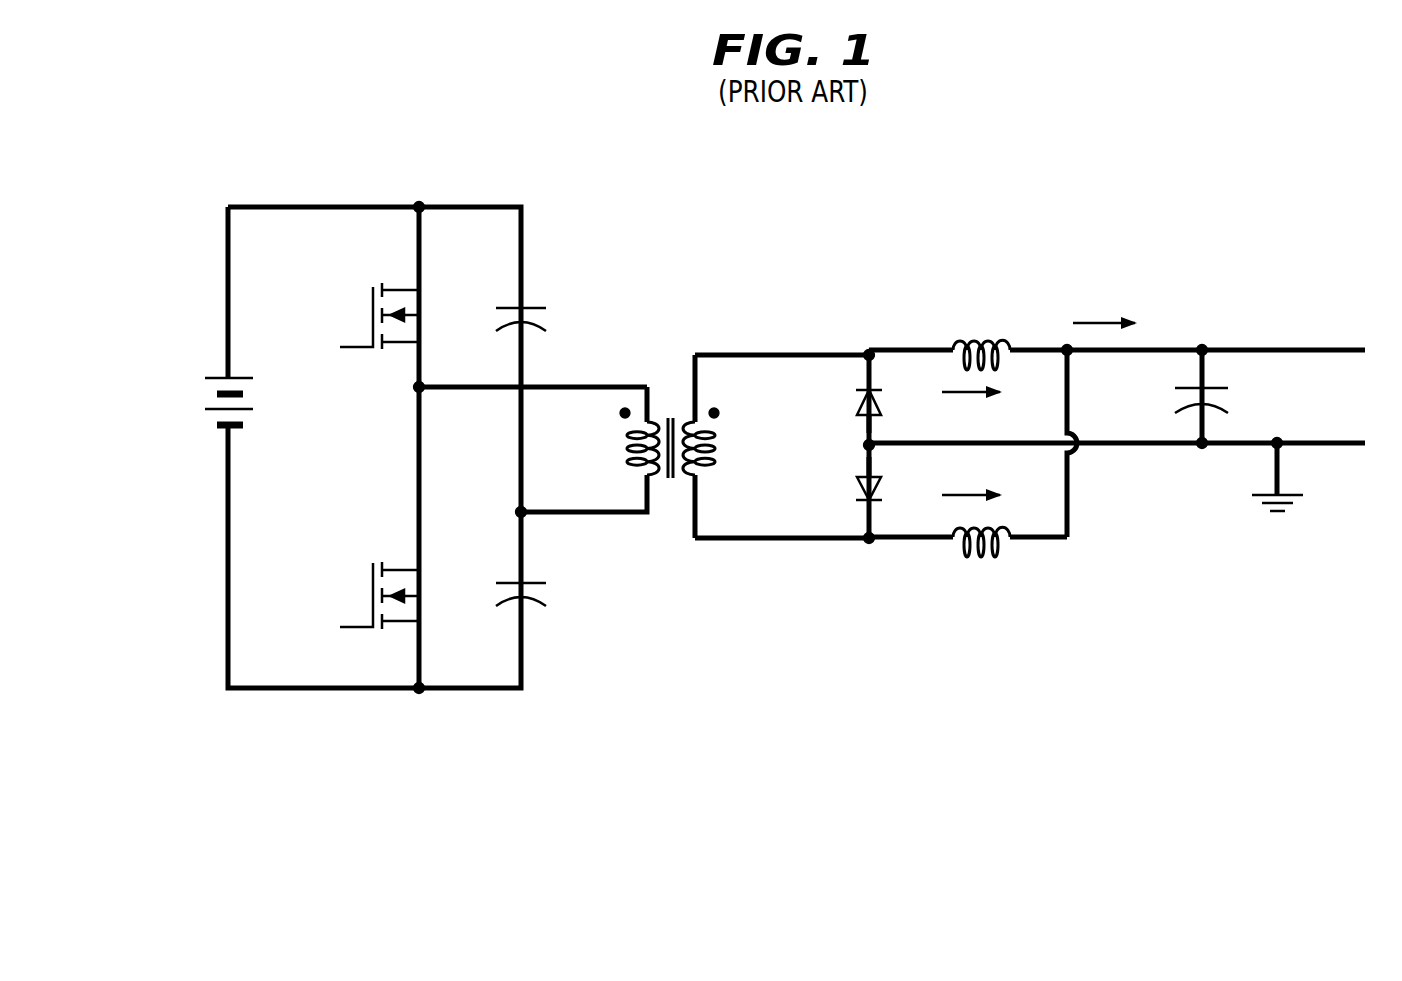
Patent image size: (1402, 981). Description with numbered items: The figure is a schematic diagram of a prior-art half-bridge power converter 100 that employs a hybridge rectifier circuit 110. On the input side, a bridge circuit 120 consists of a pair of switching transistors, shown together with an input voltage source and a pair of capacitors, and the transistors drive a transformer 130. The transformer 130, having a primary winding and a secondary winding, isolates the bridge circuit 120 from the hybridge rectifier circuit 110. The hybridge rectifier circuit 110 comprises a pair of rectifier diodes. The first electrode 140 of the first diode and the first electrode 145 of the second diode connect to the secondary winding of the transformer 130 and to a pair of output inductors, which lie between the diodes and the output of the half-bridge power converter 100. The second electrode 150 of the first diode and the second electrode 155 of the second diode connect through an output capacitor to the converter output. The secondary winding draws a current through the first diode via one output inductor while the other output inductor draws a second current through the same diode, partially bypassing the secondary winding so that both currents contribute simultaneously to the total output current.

The half-bridge power converter 100 is at (712, 657).
The hybridge rectifier circuit 110 is at (1032, 308).
The bridge circuit 120 is at (417, 188).
The transformer 130 is at (671, 372).
The first electrode of rectifier diode D 140 is at (864, 385).
The first electrode of rectifier diode D0 145 is at (866, 497).
The second electrode of rectifier diode D 150 is at (858, 414).
The second electrode of rectifier diode D0 155 is at (862, 478).